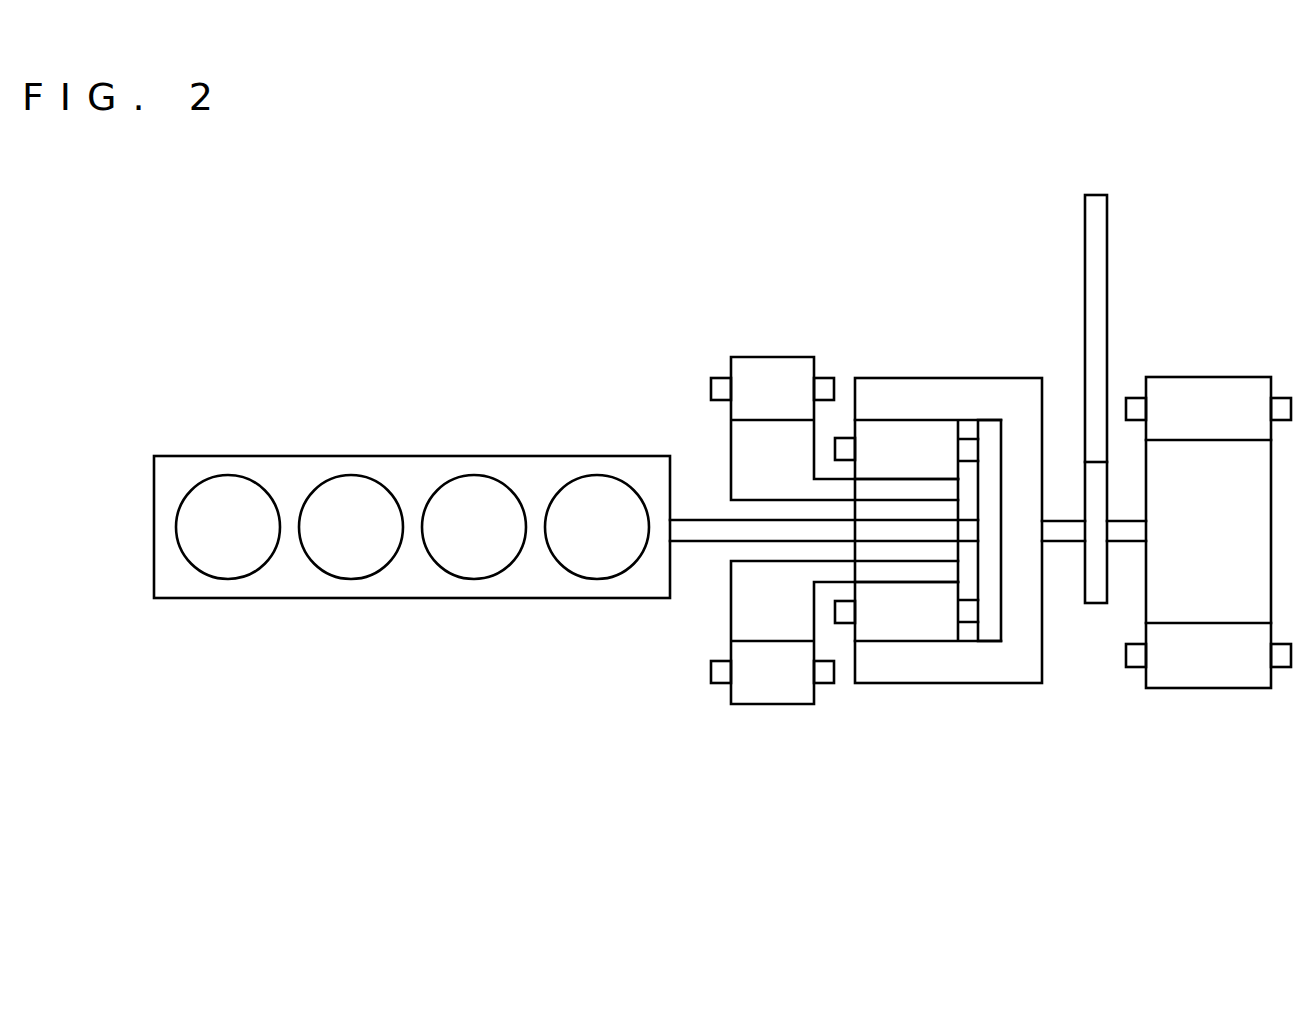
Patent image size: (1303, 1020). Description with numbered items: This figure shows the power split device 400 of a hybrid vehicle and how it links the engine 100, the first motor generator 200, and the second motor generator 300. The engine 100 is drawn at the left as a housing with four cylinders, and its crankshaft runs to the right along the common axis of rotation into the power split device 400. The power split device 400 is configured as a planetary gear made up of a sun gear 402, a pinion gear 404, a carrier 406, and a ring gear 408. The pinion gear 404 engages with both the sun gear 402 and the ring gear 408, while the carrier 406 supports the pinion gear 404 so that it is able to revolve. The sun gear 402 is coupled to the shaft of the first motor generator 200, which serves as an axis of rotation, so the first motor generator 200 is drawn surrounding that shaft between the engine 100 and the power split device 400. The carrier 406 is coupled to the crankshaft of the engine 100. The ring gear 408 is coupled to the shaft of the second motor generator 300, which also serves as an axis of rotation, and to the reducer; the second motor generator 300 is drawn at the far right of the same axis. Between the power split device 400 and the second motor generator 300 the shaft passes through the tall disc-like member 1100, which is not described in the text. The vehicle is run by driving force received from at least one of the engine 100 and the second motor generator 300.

The engine 100 is at (414, 456).
The motor generator (1) 200 is at (773, 357).
The motor generator (2) 300 is at (1207, 377).
The power split device 400 is at (933, 526).
The sun gear 402 is at (890, 582).
The pinion gear 404 is at (927, 642).
The carrier 406 is at (978, 561).
The ring gear 408 is at (1000, 683).
The damper 1100 is at (1116, 175).